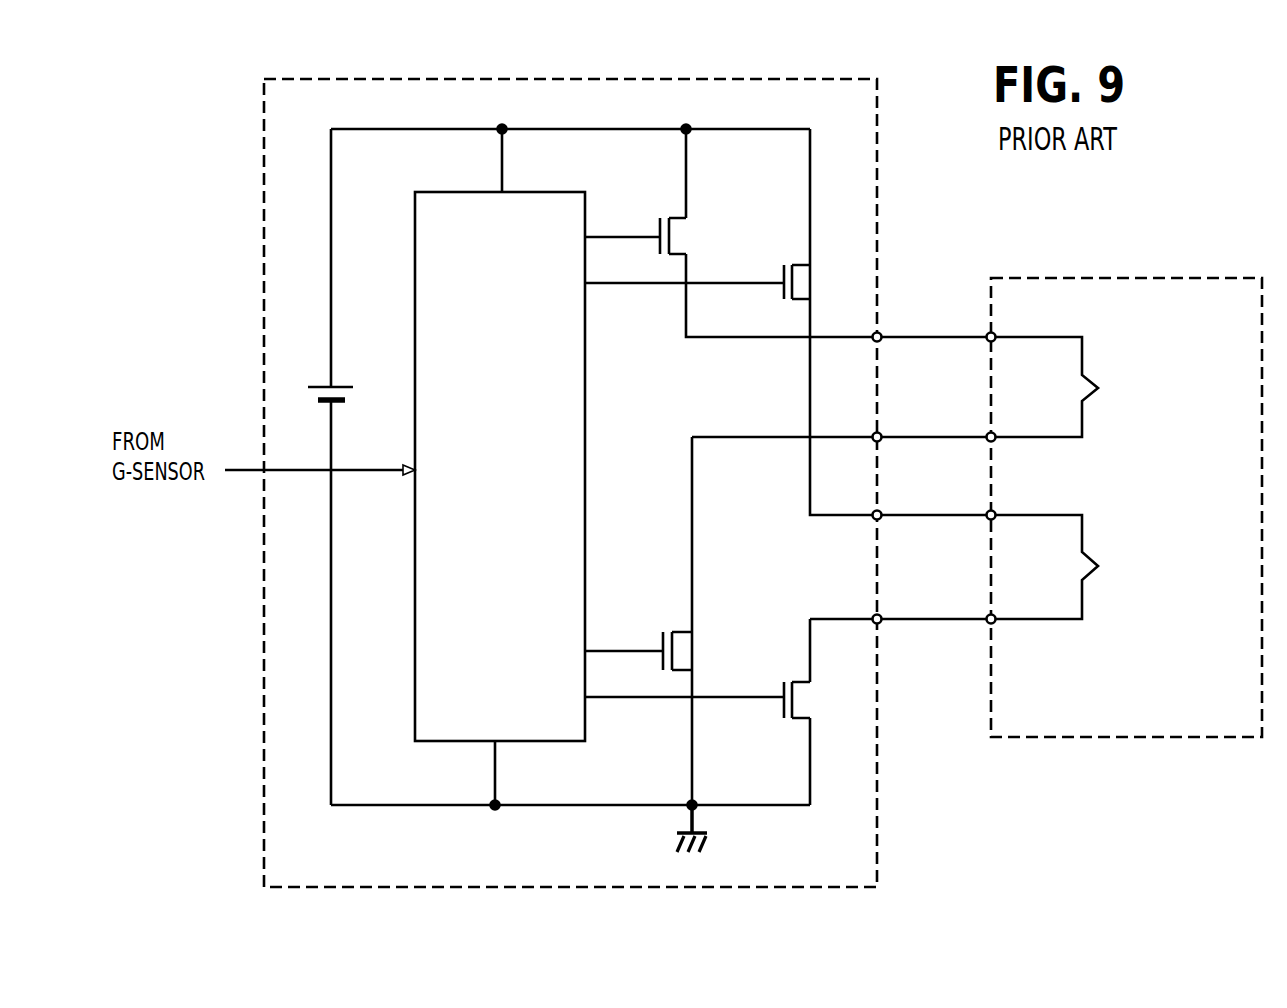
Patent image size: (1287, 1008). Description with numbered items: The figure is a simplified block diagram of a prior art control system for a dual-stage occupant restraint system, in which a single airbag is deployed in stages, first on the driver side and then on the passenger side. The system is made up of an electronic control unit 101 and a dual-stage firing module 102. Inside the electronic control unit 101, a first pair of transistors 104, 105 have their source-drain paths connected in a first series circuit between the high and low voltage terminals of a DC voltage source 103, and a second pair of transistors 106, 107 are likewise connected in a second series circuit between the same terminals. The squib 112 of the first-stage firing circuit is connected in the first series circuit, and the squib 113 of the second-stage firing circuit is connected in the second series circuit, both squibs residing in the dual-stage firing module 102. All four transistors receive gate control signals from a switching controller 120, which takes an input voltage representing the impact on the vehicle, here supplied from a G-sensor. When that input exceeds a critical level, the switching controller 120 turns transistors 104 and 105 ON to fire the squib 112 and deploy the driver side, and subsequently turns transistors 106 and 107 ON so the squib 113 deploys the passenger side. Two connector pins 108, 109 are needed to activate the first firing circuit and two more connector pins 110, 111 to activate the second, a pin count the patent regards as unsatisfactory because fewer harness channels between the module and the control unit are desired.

The electronic control unit 101 is at (588, 79).
The dual-stage firing module 102 is at (1110, 278).
The DC voltage source 103 is at (345, 387).
The transistor 104 is at (660, 226).
The transistor 105 is at (663, 640).
The transistor 106 is at (784, 276).
The transistor 107 is at (784, 690).
The connector pin 108 is at (880, 335).
The connector pin 109 is at (880, 435).
The connector pin 110 is at (880, 513).
The connector pin 111 is at (880, 617).
The squib of the first-stage firing circuit 112 is at (1099, 388).
The squib of the second-stage firing circuit 113 is at (1099, 566).
The switching controller 120 is at (528, 196).